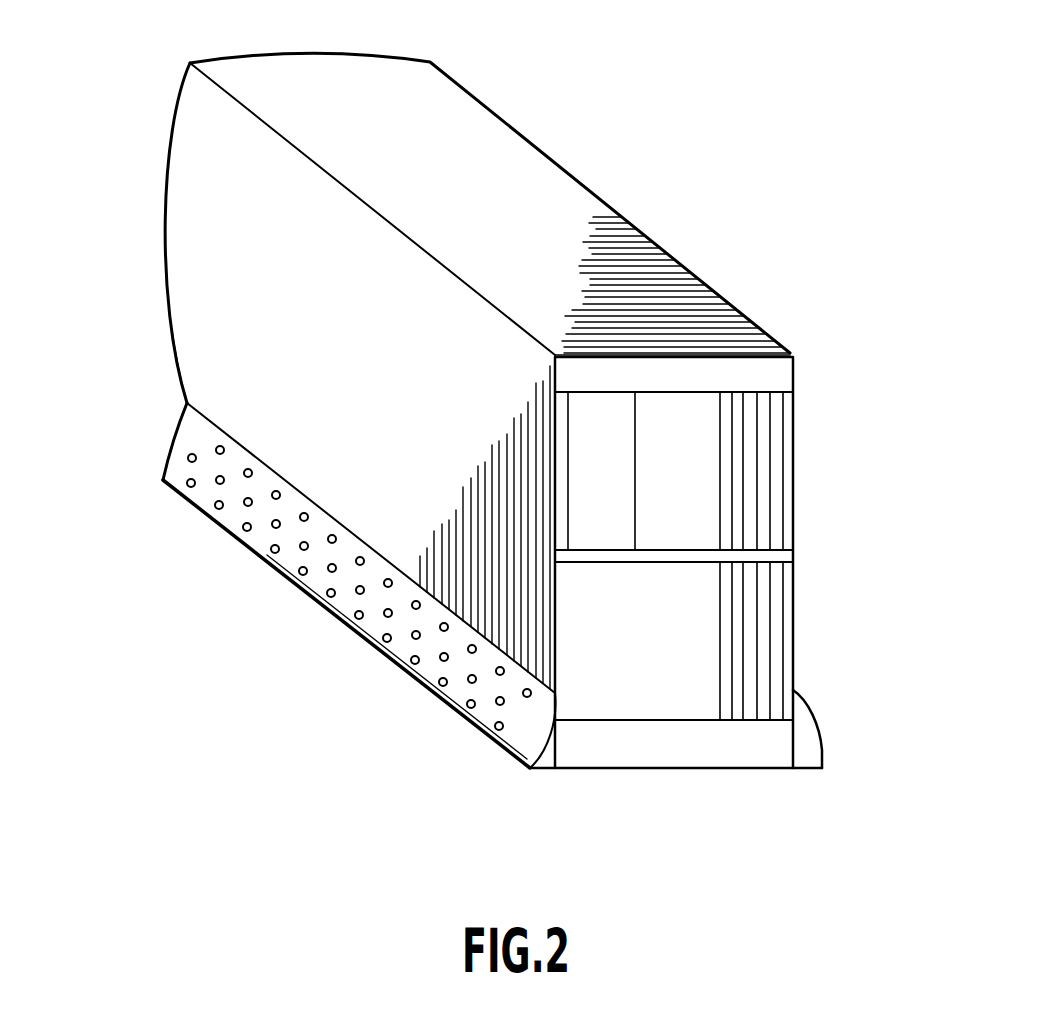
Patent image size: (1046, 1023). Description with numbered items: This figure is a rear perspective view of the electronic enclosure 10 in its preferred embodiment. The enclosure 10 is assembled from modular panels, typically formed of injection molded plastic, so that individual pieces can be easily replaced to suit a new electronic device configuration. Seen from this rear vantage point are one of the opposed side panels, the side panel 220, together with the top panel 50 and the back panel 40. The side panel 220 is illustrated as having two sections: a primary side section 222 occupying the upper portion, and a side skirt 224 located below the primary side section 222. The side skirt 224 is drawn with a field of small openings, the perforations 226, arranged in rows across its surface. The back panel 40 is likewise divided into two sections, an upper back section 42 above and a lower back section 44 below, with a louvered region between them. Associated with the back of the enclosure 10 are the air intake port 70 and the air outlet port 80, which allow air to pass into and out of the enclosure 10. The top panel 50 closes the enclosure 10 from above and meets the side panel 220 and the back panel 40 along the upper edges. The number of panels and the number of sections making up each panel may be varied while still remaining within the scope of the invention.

The electronic enclosure 10 is at (703, 166).
The back panel 40 is at (632, 749).
The upper back section 42 is at (792, 368).
The lower back section 44 is at (758, 748).
The top panel 50 is at (452, 96).
The air intake port 70 is at (788, 444).
The air outlet port 80 is at (788, 656).
The side panel 220 is at (170, 207).
The primary side section 222 is at (188, 358).
The side skirt 224 is at (188, 450).
The perforations 226 is at (273, 552).